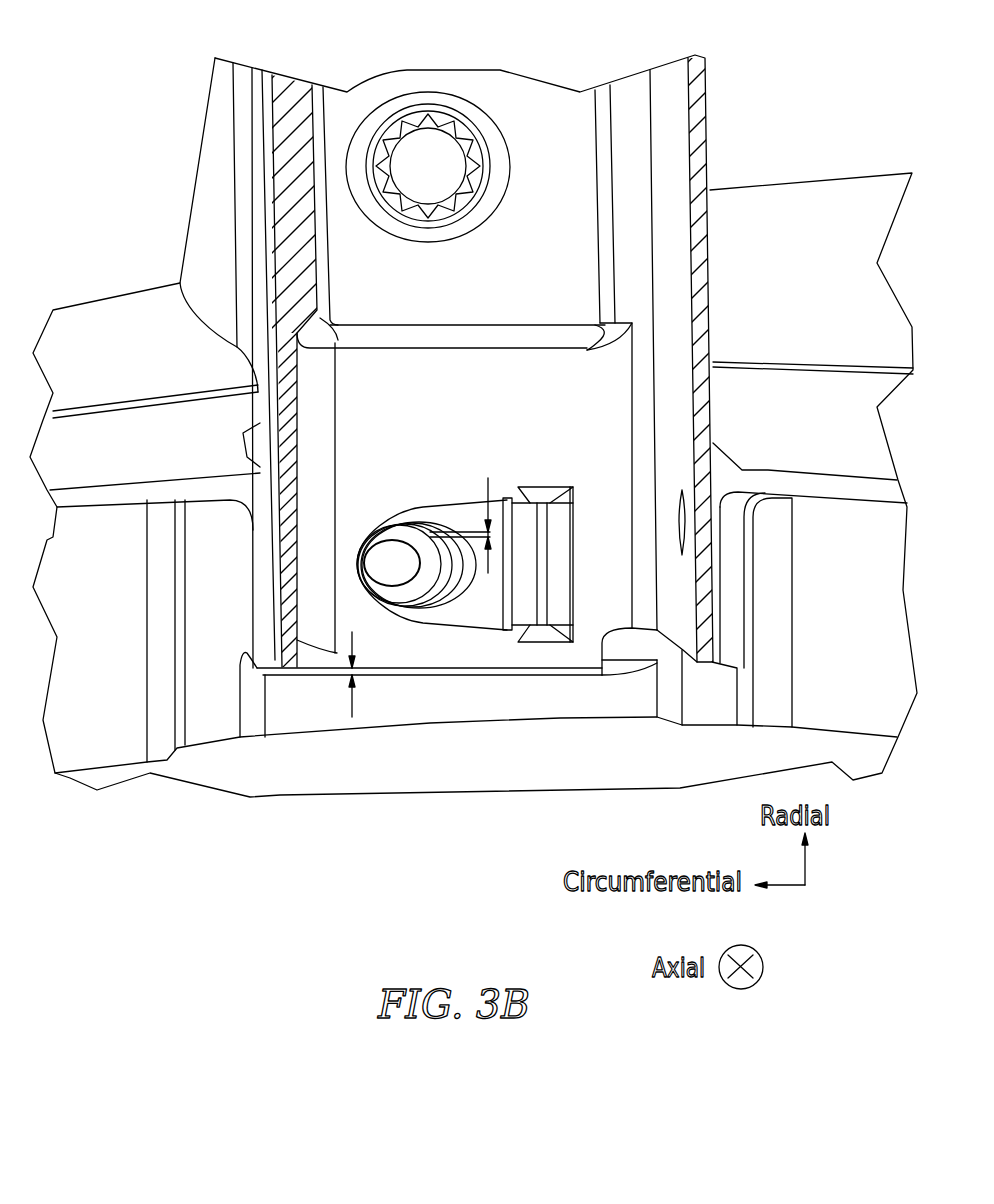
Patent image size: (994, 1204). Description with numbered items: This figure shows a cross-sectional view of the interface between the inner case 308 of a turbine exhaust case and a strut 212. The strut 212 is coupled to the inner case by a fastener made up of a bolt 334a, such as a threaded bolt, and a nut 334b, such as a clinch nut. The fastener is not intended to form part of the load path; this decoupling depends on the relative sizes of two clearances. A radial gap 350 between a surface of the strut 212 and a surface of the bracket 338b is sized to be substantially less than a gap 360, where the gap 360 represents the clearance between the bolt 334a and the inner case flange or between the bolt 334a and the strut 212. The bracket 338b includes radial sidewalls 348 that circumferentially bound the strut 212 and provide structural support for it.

The strut 212 is at (560, 389).
The bolt 334a is at (382, 555).
The nut 334b is at (448, 512).
The gap 360 is at (492, 482).
The sidewalls 348 is at (227, 602).
The inner case 308 is at (125, 676).
The gap 350 is at (350, 675).
The bracket 338b is at (578, 695).